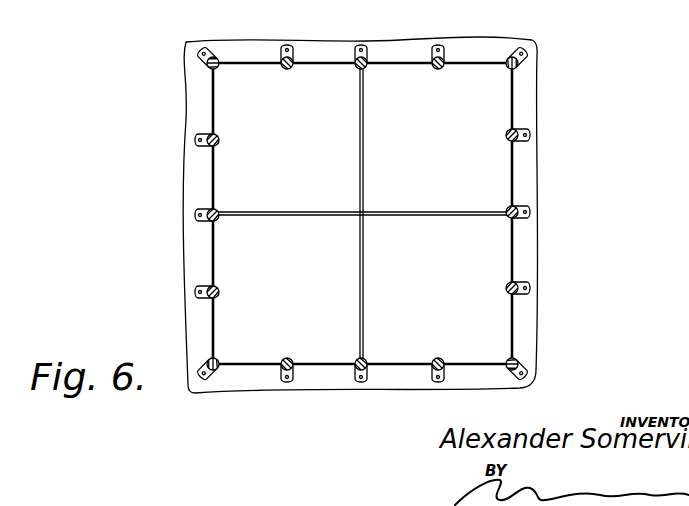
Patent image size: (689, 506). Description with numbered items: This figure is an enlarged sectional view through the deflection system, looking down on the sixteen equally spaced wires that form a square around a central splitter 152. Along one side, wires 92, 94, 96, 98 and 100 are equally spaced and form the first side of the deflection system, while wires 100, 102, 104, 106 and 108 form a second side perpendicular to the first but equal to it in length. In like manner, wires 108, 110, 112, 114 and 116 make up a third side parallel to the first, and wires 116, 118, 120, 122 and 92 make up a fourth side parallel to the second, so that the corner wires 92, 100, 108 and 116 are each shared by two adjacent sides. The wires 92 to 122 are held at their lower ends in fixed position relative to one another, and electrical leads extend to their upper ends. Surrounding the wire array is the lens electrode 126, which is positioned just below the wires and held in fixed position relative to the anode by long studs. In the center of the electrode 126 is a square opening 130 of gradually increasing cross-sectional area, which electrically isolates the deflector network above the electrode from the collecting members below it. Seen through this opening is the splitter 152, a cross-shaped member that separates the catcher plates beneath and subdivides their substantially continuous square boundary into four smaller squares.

The wire 92 is at (215, 376).
The wire 94 is at (200, 292).
The wire 96 is at (200, 216).
The wire 98 is at (200, 141).
The wire 100 is at (210, 66).
The wire 102 is at (287, 48).
The wire 104 is at (366, 56).
The wire 106 is at (440, 52).
The wire 108 is at (522, 58).
The wire 110 is at (520, 134).
The wire 112 is at (520, 208).
The wire 114 is at (520, 288).
The wire 116 is at (520, 364).
The wire 118 is at (434, 372).
The wire 120 is at (356, 372).
The wire 122 is at (283, 372).
The lens electrode 126 is at (530, 100).
The square opening 130 is at (512, 165).
The splitter 152 is at (398, 212).